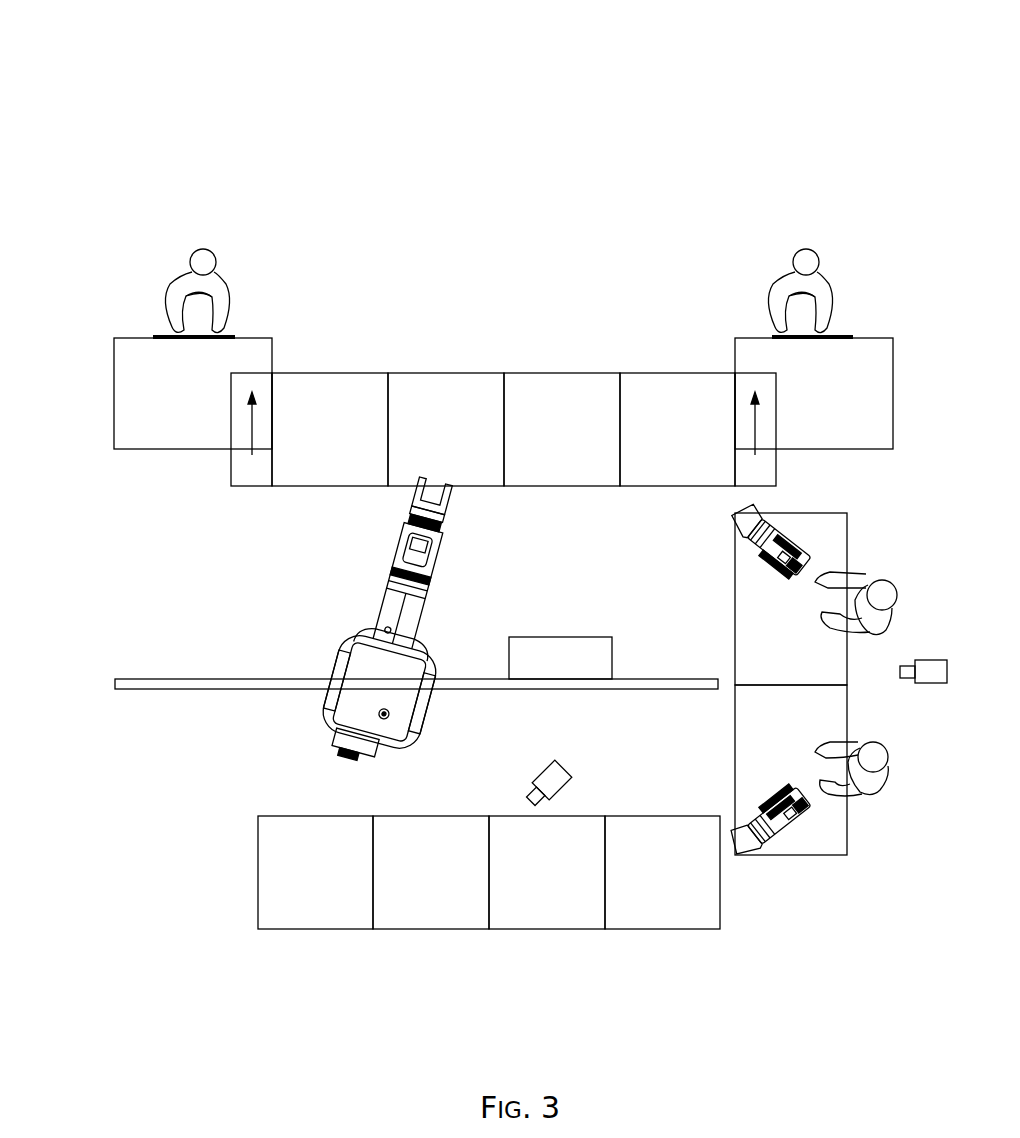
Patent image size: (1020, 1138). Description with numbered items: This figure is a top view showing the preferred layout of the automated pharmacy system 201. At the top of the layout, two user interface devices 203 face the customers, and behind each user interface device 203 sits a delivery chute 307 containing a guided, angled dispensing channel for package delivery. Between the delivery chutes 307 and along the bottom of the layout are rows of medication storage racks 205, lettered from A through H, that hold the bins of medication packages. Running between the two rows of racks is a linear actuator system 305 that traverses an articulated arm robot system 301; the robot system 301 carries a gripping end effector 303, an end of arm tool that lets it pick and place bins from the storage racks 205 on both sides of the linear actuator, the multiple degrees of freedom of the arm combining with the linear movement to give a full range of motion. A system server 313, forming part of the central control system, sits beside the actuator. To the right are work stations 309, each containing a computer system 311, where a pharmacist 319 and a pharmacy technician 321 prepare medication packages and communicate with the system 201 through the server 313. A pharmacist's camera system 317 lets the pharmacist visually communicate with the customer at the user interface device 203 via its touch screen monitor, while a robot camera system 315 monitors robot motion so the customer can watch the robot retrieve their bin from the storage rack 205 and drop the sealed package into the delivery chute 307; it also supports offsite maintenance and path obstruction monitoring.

The automated pharmacy system 201 is at (778, 100).
The user interface device 203 is at (114, 393).
The medication storage rack 205 is at (348, 373).
The articulated arm robot system 301 is at (345, 648).
The gripping end effector 303 is at (410, 505).
The linear actuator system 305 is at (237, 679).
The delivery chute 307 is at (249, 486).
The work station 309 is at (735, 596).
The computer system 311 is at (740, 521).
The system server 313 is at (560, 637).
The robot camera system 315 is at (560, 768).
The pharmacist's camera system 317 is at (935, 660).
The pharmacist 319 is at (900, 762).
The pharmacy technician 321 is at (888, 578).